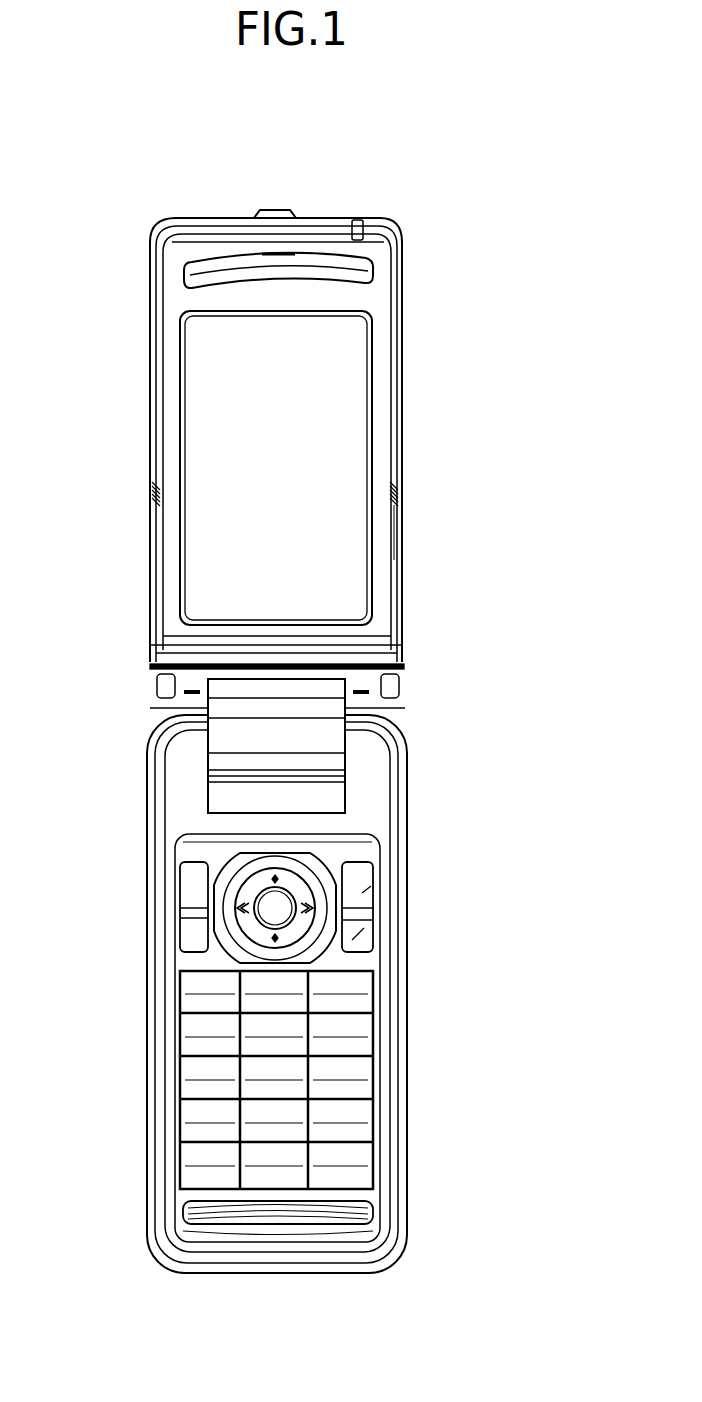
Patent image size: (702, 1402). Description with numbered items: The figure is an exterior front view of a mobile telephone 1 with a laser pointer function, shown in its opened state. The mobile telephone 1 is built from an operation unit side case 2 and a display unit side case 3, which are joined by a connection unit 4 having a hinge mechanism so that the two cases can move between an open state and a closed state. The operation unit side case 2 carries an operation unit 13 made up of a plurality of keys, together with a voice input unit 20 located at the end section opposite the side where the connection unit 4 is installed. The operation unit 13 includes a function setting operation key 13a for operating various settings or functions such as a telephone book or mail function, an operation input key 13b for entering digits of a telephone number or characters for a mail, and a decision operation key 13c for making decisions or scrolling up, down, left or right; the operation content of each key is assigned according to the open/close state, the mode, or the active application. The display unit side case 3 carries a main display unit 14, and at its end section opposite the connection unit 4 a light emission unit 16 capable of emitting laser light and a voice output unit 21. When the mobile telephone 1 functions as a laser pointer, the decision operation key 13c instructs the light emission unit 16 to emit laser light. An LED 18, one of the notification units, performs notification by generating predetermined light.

The mobile telephone 1 is at (466, 189).
The operation unit side case 2 is at (436, 815).
The display unit side case 3 is at (133, 447).
The connection unit 4 is at (133, 682).
The operation unit 13 is at (517, 832).
The function setting operation key 13a is at (348, 904).
The operation input key 13b is at (395, 963).
The decision operation key 13c is at (330, 856).
The main display unit 14 is at (346, 452).
The light emission unit 16 is at (258, 209).
The LED 18 is at (357, 216).
The voice input unit 20 is at (281, 1203).
The voice output unit 21 is at (301, 254).